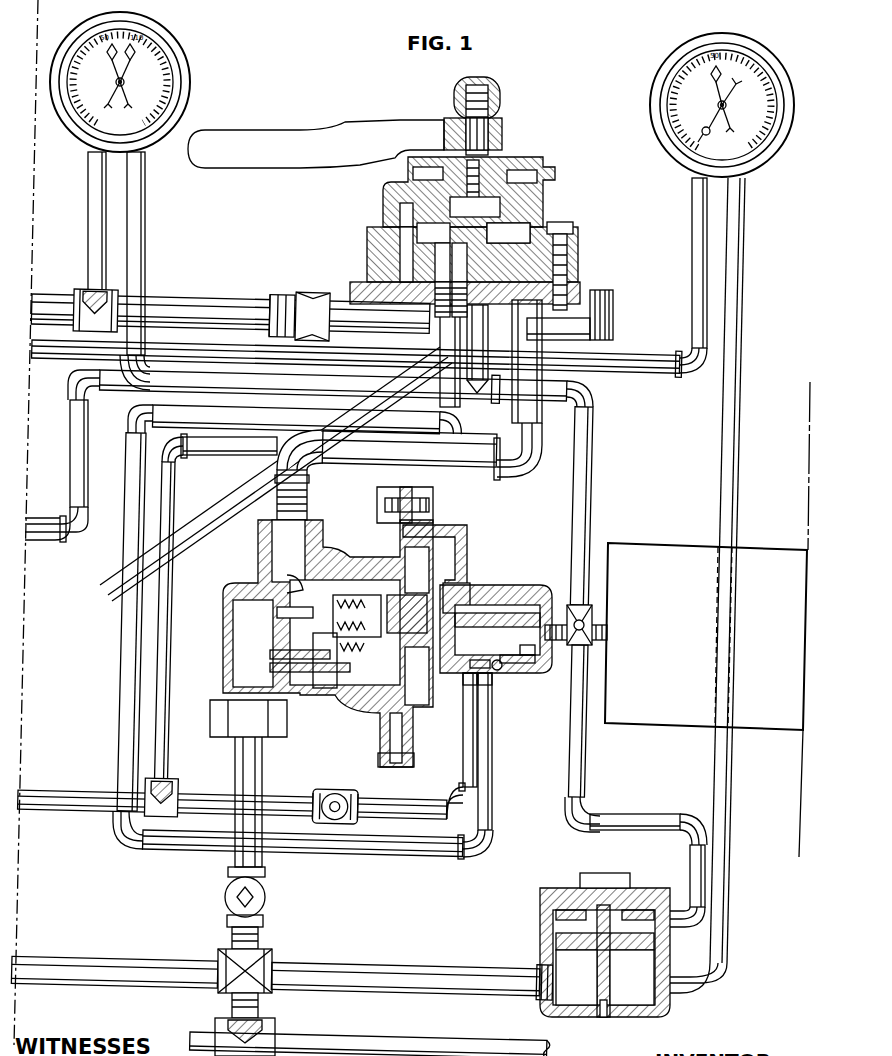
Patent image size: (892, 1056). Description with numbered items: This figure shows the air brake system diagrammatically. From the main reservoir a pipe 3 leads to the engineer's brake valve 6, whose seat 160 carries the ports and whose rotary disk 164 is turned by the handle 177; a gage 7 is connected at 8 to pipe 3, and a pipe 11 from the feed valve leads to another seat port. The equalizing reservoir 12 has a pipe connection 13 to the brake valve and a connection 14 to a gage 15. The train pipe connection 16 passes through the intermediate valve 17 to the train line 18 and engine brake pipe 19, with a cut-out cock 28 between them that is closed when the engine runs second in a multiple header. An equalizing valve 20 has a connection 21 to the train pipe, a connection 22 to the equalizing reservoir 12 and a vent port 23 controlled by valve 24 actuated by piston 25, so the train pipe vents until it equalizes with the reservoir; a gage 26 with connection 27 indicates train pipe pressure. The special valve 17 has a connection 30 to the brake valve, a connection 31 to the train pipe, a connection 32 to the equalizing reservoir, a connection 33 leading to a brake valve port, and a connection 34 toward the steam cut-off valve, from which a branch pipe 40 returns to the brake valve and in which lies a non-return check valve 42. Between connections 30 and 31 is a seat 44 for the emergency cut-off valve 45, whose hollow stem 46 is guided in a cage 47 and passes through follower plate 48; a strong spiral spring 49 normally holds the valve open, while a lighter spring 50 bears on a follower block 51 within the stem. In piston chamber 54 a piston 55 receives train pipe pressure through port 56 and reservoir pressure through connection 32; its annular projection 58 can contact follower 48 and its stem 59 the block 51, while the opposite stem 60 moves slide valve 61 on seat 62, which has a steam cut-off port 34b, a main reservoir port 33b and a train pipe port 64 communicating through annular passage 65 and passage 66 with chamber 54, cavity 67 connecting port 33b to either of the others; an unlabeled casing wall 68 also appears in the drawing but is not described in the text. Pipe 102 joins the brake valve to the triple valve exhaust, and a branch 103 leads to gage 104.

The main reservoir pipe 3 is at (207, 302).
The engineer's brake valve 6 is at (578, 252).
The gage 7 is at (118, 96).
The gage connection 8 is at (90, 245).
The feed valve pipe 11 is at (70, 445).
The equalizing reservoir 12 is at (706, 636).
The equalizing reservoir pipe connection 13 is at (488, 345).
The gage connection 14 is at (140, 252).
The gage 15 is at (122, 86).
The train pipe connection 16 is at (512, 411).
The intermediate valve 17 is at (235, 592).
The train line 18 is at (200, 1030).
The engine brake pipe 19 is at (134, 962).
The equalizing valve 20 is at (540, 915).
The train pipe connection 21 is at (400, 970).
The equalizing reservoir connection 22 is at (587, 762).
The vent port 23 is at (604, 1018).
The valve 24 is at (632, 977).
The piston 25 is at (576, 977).
The gage 26 is at (724, 106).
The gage connection 27 is at (736, 450).
The cut-out cock 28 is at (265, 897).
The engineer's brake valve connection 30 is at (310, 522).
The train pipe connection 31 is at (248, 718).
The equalizing reservoir connection 32 is at (568, 622).
The connection 33 is at (490, 750).
The main reservoir port 33b is at (488, 680).
The steam cut-off valve connection 34 is at (463, 760).
The steam cut-off valve port 34b is at (472, 680).
The branch pipe 40 is at (215, 458).
The non-return check valve 42 is at (338, 790).
The seat 44 is at (290, 577).
The emergency cut-off valve 45 is at (281, 614).
The hollow stem 46 is at (343, 600).
The cage 47 is at (372, 620).
The follower plate 48 is at (407, 608).
The spiral spring 49 is at (360, 652).
The lighter spring 50 is at (322, 688).
The follower block 51 is at (368, 595).
The piston chamber 54 is at (417, 570).
The piston 55 is at (467, 545).
The port 56 is at (270, 672).
The annular projection 58 is at (417, 676).
The stem 59 is at (470, 590).
The stem 60 is at (494, 630).
The slide valve 61 is at (500, 670).
The seat 62 is at (522, 664).
The train pipe port 64 is at (495, 672).
The annular passage 65 is at (510, 588).
The passage 66 is at (444, 535).
The cavity 67 is at (540, 655).
The wall 68 is at (270, 653).
The pipe 102 is at (118, 576).
The branch 103 is at (652, 368).
The gage 104 is at (720, 106).
The seat 160 is at (578, 266).
The rotary disk 164 is at (548, 214).
The handle 177 is at (316, 144).